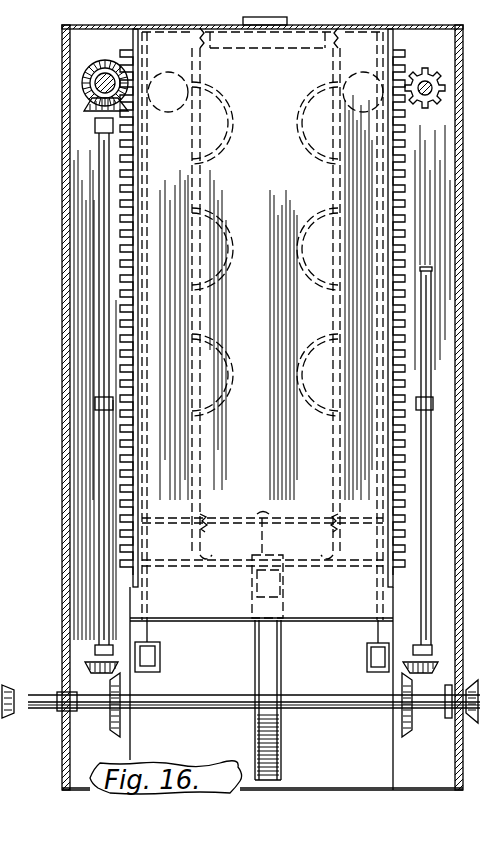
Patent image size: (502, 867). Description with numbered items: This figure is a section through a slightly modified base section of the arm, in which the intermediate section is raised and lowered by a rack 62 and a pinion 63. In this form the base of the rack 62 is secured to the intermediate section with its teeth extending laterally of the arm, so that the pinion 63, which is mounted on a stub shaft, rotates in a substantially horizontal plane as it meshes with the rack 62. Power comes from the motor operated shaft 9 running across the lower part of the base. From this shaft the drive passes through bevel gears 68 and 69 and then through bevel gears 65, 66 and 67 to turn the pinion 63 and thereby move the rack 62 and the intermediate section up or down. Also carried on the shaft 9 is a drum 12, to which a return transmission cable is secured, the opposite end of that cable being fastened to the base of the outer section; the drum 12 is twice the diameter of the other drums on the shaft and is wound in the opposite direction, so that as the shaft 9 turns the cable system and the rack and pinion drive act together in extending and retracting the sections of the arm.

The motor operated shaft 9 is at (338, 707).
The drum 12 is at (250, 740).
The rack 62 is at (393, 193).
The pinion 63 is at (447, 80).
The bevel gear 65 is at (82, 86).
The bevel gear 66 is at (83, 110).
The bevel gear 67 is at (465, 453).
The bevel gear 68 is at (465, 657).
The bevel gear 69 is at (413, 727).